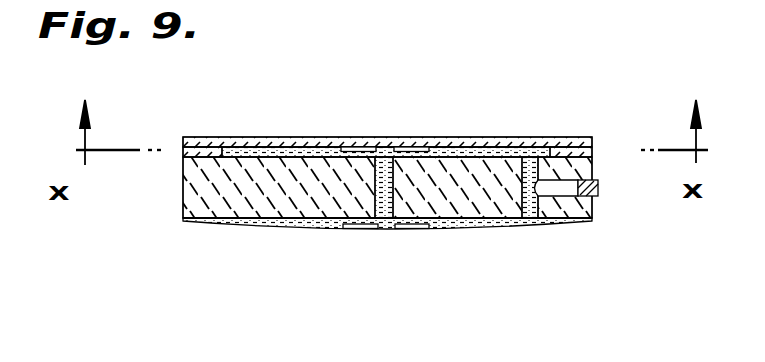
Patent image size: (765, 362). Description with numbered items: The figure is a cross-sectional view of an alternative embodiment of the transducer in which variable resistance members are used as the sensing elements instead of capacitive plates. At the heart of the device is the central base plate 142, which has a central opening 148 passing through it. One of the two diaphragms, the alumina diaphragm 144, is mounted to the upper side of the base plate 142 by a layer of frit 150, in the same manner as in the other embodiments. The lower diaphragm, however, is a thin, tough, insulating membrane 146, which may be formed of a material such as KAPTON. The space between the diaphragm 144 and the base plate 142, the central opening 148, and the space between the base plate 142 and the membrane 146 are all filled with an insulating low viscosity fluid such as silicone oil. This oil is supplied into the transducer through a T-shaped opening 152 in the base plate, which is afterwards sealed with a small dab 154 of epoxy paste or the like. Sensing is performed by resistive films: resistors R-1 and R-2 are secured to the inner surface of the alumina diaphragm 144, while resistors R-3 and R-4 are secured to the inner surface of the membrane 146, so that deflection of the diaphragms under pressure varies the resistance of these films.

The central base plate 142 is at (208, 186).
The diaphragm 144 is at (516, 137).
The insulating membrane 146 is at (268, 228).
The central opening 148 is at (382, 172).
The frit 150 is at (594, 150).
The T-shaped opening 152 is at (533, 210).
The dab of epoxy paste 154 is at (599, 188).
The resistor R-1 is at (355, 147).
The resistor R-2 is at (413, 147).
The resistor R-3 is at (350, 229).
The resistor R-4 is at (410, 229).